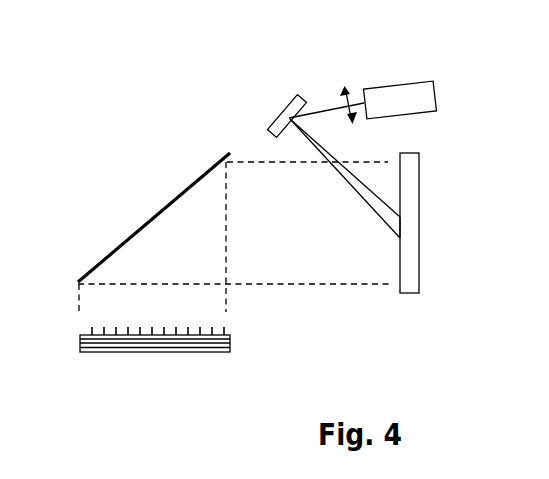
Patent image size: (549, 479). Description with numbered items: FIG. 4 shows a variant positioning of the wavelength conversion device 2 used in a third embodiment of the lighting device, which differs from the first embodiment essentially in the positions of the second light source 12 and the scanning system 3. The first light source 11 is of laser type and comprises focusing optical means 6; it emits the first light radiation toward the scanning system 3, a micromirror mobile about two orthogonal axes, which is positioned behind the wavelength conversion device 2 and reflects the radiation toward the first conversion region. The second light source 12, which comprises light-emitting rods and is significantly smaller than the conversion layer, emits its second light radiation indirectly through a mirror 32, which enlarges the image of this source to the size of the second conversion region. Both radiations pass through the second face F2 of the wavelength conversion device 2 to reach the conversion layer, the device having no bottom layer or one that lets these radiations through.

The wavelength conversion device 2 is at (407, 285).
The scanning system 3 is at (280, 120).
The focusing optical means 6 is at (345, 90).
The first light source 11 is at (418, 98).
The second light source 12 is at (152, 348).
The mirror 32 is at (160, 210).
The second face F2 is at (398, 272).